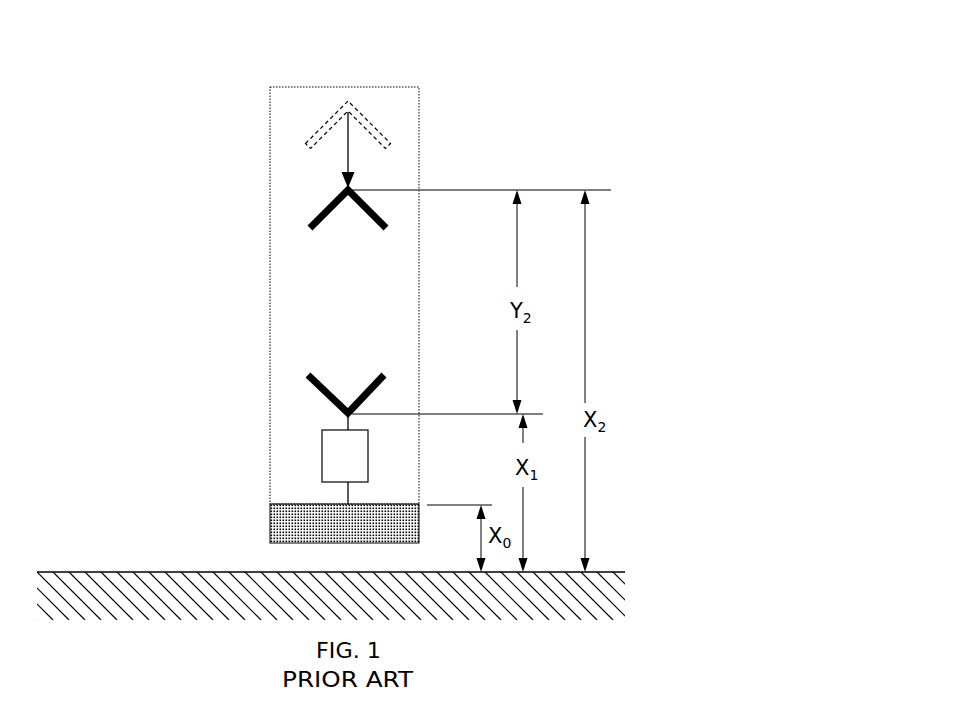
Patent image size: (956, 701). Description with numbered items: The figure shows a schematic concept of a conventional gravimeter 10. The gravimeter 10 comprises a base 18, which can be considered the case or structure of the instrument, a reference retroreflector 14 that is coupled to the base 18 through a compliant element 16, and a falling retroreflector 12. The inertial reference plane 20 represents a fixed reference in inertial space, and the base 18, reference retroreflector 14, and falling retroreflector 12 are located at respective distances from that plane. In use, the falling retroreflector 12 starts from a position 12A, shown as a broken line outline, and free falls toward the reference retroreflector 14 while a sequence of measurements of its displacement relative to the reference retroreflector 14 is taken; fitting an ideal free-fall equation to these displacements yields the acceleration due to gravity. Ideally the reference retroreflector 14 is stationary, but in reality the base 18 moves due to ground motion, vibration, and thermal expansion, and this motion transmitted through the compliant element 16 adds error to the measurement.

The gravimeter 10 is at (275, 72).
The starting position of falling retroreflector 12A is at (325, 128).
The falling retroreflector 12 is at (322, 212).
The reference retroreflector 14 is at (330, 400).
The compliant element 16 is at (322, 453).
The base 18 is at (283, 523).
The inertial reference plane 20 is at (95, 572).